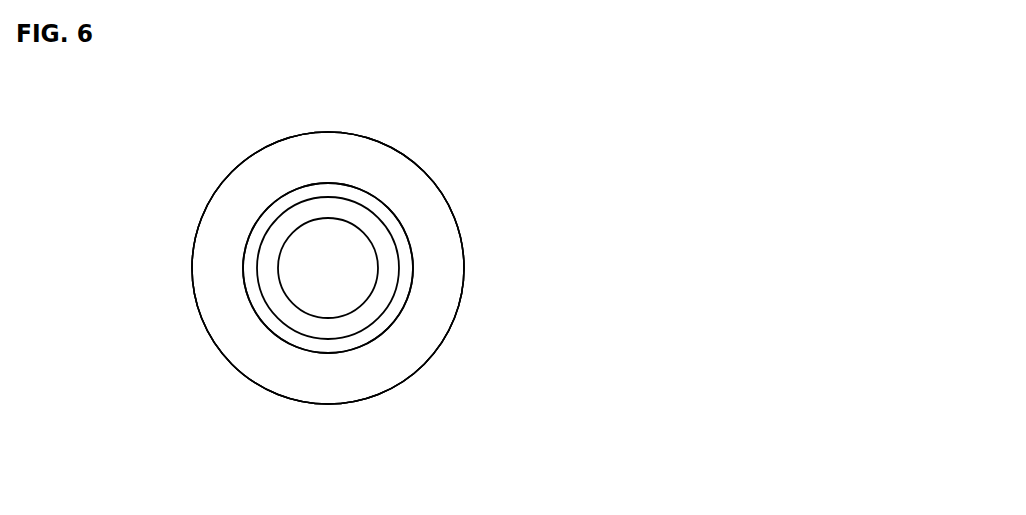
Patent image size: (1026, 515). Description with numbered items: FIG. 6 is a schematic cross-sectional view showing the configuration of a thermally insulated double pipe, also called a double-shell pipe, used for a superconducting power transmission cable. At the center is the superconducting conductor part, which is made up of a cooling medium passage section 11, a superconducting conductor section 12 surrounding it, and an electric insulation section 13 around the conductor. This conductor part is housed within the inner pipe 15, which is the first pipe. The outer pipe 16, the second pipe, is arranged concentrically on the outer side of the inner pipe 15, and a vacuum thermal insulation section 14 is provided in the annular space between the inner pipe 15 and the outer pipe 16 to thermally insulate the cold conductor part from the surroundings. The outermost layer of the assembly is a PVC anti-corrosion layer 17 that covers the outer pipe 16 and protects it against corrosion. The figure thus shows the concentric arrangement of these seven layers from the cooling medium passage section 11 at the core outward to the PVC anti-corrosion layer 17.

The cooling medium passage section 11 is at (288, 278).
The superconducting conductor section 12 is at (363, 220).
The electric insulation section 13 is at (312, 192).
The vacuum thermal insulation section 14 is at (423, 333).
The inner pipe 15 is at (418, 247).
The outer pipe 16 is at (465, 268).
The PVC anti-corrosion layer 17 is at (353, 404).